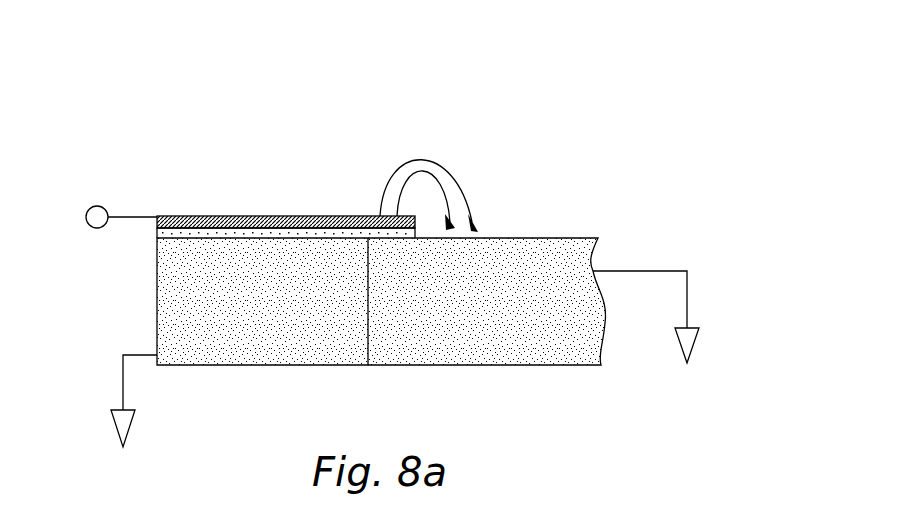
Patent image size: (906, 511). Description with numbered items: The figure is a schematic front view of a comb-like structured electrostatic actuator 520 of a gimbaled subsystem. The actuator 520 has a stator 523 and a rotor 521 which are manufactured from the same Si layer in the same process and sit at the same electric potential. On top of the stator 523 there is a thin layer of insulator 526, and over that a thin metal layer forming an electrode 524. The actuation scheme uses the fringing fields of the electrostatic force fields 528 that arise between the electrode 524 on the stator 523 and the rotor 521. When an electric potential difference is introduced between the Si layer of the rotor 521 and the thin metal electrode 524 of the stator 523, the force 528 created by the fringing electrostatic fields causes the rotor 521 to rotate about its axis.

The electrostatic actuator 520 is at (404, 248).
The rotor 521 is at (505, 265).
The stator 523 is at (185, 299).
The electrode 524 is at (277, 230).
The insulator 526 is at (213, 232).
The electrostatic force fields 528 is at (429, 142).